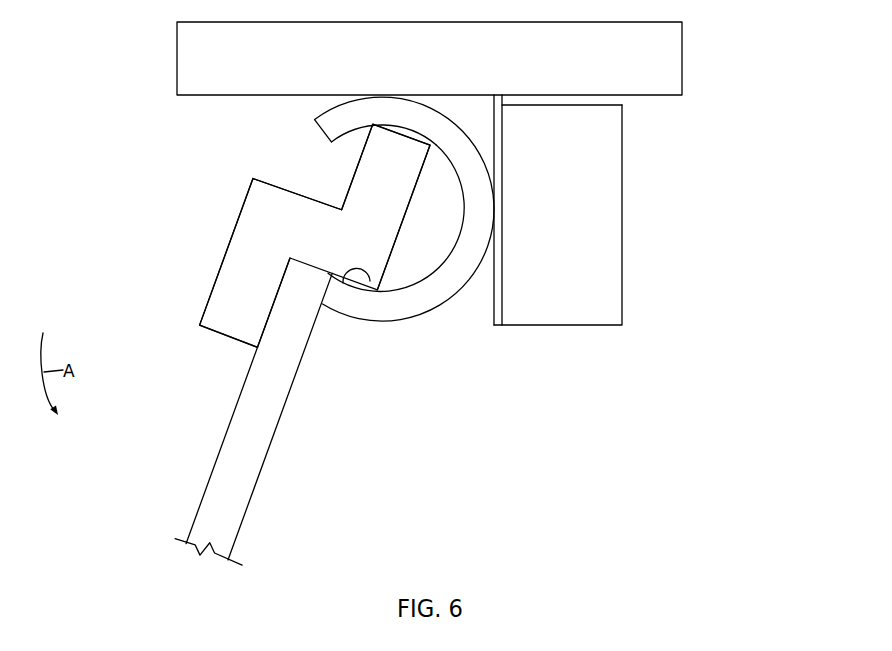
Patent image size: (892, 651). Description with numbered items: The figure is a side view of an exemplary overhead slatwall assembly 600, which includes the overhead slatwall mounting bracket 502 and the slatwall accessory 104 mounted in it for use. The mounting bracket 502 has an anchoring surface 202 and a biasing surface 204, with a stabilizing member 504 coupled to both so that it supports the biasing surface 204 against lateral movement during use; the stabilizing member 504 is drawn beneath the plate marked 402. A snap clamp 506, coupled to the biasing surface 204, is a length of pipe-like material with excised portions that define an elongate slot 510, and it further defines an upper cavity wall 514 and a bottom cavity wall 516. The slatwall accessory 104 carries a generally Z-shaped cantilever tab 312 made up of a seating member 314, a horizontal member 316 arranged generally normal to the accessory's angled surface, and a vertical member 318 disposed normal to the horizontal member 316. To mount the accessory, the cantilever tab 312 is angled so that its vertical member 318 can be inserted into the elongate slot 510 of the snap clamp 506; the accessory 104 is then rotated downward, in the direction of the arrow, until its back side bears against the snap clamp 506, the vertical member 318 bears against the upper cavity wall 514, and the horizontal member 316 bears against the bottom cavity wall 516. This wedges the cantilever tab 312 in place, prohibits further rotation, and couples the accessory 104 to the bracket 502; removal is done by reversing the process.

The overhead slatwall assembly 600 is at (389, 296).
The top plate 402 is at (450, 69).
The overhead slatwall mounting bracket 502 is at (587, 232).
The stabilizing member 504 is at (592, 202).
The biasing surface 204 is at (502, 307).
The anchoring surface 202 is at (586, 122).
The snap clamp 506 is at (361, 209).
The elongate slot 510 is at (398, 218).
The upper cavity wall 514 is at (383, 102).
The bottom cavity wall 516 is at (370, 293).
The cantilever tab 312 is at (289, 235).
The seating member 314 is at (233, 295).
The horizontal member 316 is at (298, 218).
The vertical member 318 is at (392, 152).
The slatwall accessory 104 is at (275, 412).